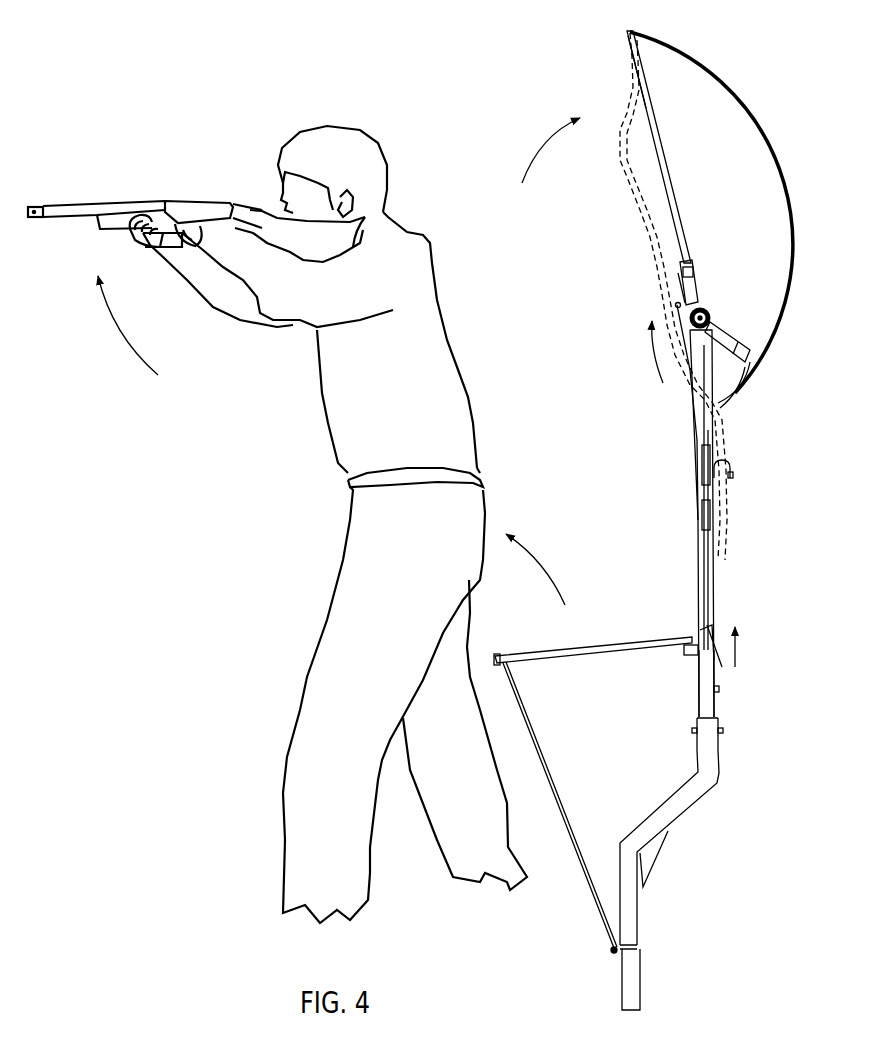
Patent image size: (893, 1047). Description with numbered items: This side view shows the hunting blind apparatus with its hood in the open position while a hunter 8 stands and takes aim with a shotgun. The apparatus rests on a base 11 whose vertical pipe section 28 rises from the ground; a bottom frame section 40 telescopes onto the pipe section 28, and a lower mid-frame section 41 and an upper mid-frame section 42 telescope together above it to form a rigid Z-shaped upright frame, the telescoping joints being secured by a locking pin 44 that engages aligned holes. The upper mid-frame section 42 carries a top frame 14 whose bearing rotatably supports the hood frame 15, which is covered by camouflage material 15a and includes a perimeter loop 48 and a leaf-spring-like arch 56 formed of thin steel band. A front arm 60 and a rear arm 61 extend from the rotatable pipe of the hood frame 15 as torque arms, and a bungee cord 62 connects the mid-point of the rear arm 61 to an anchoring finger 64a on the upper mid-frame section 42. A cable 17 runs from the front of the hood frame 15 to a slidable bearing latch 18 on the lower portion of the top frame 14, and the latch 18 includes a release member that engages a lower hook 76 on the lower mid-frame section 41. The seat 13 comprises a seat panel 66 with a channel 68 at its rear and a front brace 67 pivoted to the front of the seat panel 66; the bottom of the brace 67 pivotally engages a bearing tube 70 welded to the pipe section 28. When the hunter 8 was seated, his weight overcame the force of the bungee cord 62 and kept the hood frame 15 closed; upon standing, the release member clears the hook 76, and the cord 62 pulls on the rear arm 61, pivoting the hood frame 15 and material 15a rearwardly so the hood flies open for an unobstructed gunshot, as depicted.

The hunter 8 is at (434, 322).
The base 11 is at (655, 890).
The seat 13 is at (599, 636).
The top frame 14 is at (714, 312).
The hood frame 15 is at (647, 139).
The camouflage material 15a is at (633, 213).
The cable 17 is at (688, 383).
The latch 18 is at (713, 626).
The vertical pipe section 28 is at (625, 975).
The bottom frame section 40 is at (690, 812).
The lower mid-frame section 41 is at (698, 690).
The upper mid-frame section 42 is at (695, 518).
The locking pin 44 is at (724, 735).
The perimeter loop 48 is at (641, 73).
The arch 56 is at (720, 97).
The front arm 60 is at (698, 283).
The rear arm 61 is at (730, 340).
The bungee cord 62 is at (737, 378).
The anchoring finger 64a is at (733, 472).
The seat panel 66 is at (505, 655).
The front brace 67 is at (552, 778).
The channel 68 is at (688, 650).
The bearing tube 70 is at (611, 952).
The lower hook 76 is at (720, 690).